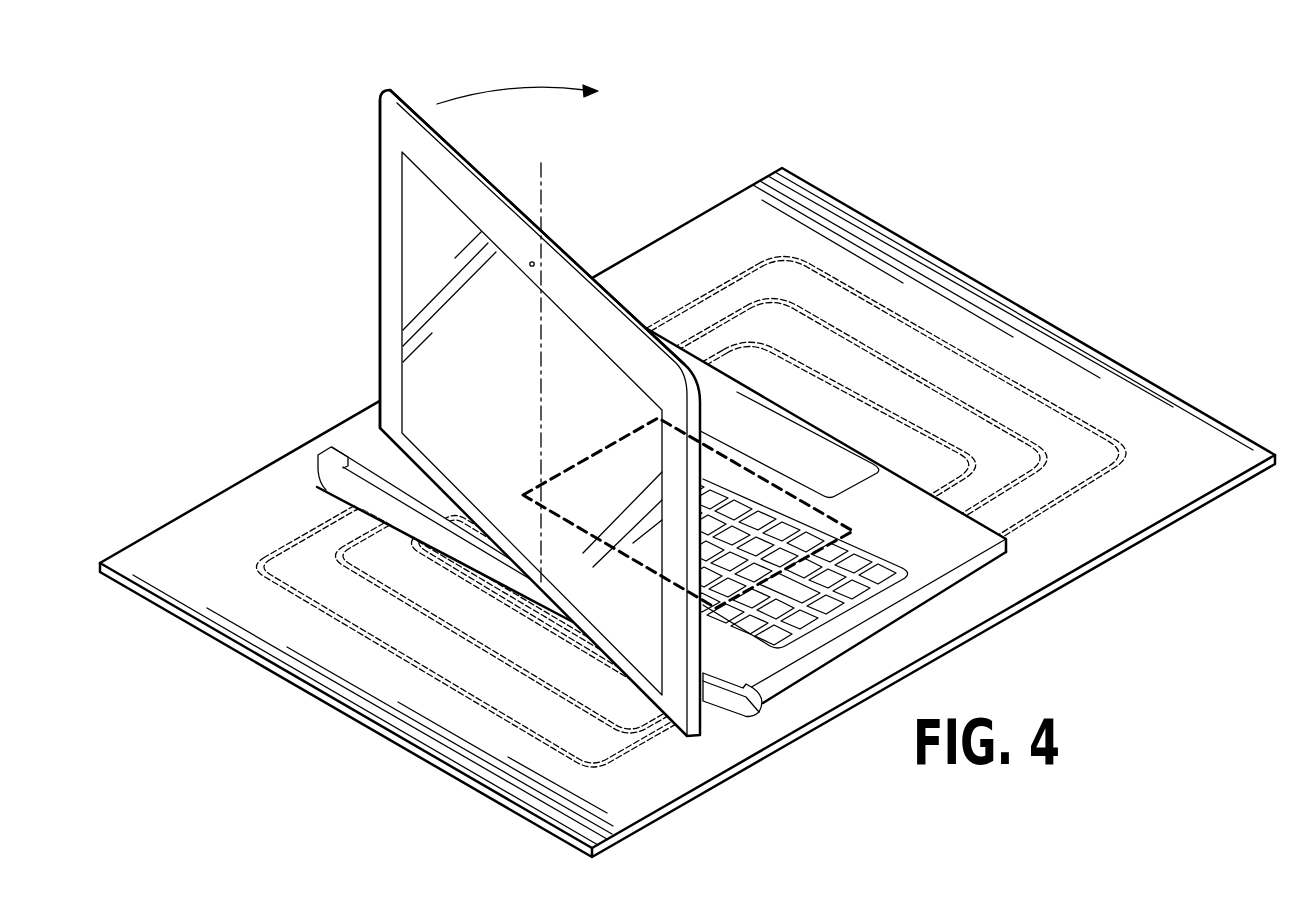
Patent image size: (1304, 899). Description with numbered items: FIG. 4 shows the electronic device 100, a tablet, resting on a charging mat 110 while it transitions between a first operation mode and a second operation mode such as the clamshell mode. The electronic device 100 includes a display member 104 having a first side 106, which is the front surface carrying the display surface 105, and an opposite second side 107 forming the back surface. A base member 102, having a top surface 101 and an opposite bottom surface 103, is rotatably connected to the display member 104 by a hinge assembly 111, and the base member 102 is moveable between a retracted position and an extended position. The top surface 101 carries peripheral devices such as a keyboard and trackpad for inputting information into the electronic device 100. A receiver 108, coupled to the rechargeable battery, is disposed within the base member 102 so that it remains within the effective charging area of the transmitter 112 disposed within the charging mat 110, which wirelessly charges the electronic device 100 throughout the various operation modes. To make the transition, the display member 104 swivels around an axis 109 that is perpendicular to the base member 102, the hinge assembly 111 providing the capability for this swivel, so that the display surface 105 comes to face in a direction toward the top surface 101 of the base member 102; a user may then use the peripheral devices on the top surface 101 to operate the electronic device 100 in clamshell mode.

The electronic device 100 is at (363, 272).
The top surface 101 is at (932, 537).
The base member 102 is at (1012, 545).
The bottom surface 103 is at (968, 582).
The display member 104 is at (503, 385).
The display surface 105 is at (504, 401).
The first side 106 is at (388, 163).
The second side 107 is at (443, 129).
The receiver 108 is at (591, 453).
The axis 109 is at (543, 207).
The charging mat 110 is at (1032, 312).
The hinge assembly 111 is at (315, 457).
The transmitter 112 is at (248, 564).